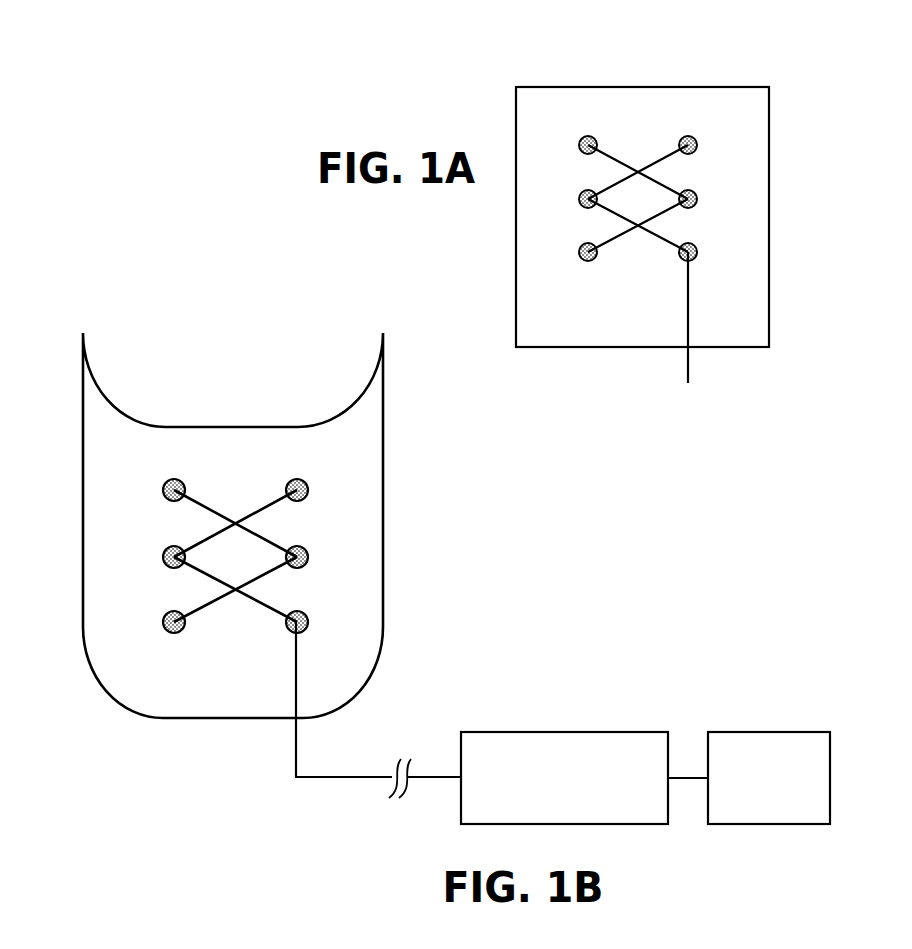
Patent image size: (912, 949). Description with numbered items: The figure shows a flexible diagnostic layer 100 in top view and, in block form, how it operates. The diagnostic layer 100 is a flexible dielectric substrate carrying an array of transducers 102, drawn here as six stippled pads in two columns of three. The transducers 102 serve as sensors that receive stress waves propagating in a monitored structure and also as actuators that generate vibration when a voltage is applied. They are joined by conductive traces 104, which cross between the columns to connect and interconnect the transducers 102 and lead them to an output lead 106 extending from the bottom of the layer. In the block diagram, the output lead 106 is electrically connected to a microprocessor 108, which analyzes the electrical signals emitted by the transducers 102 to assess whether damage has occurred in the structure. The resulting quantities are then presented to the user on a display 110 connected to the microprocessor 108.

In FIG. 1A, the diagnostic layer 100 is at (615, 103).
In FIG. 1B, the diagnostic layer 100 is at (252, 466).
In FIG. 1A, the transducers 102 is at (695, 138).
In FIG. 1B, the transducers 102 is at (235, 556).
In FIG. 1A, the conductive traces 104 is at (662, 160).
In FIG. 1A, the output leads 106 is at (693, 367).
In FIG. 1B, the output leads 106 is at (296, 772).
In FIG. 1B, the microprocessor 108 is at (580, 732).
In FIG. 1B, the display 110 is at (773, 732).